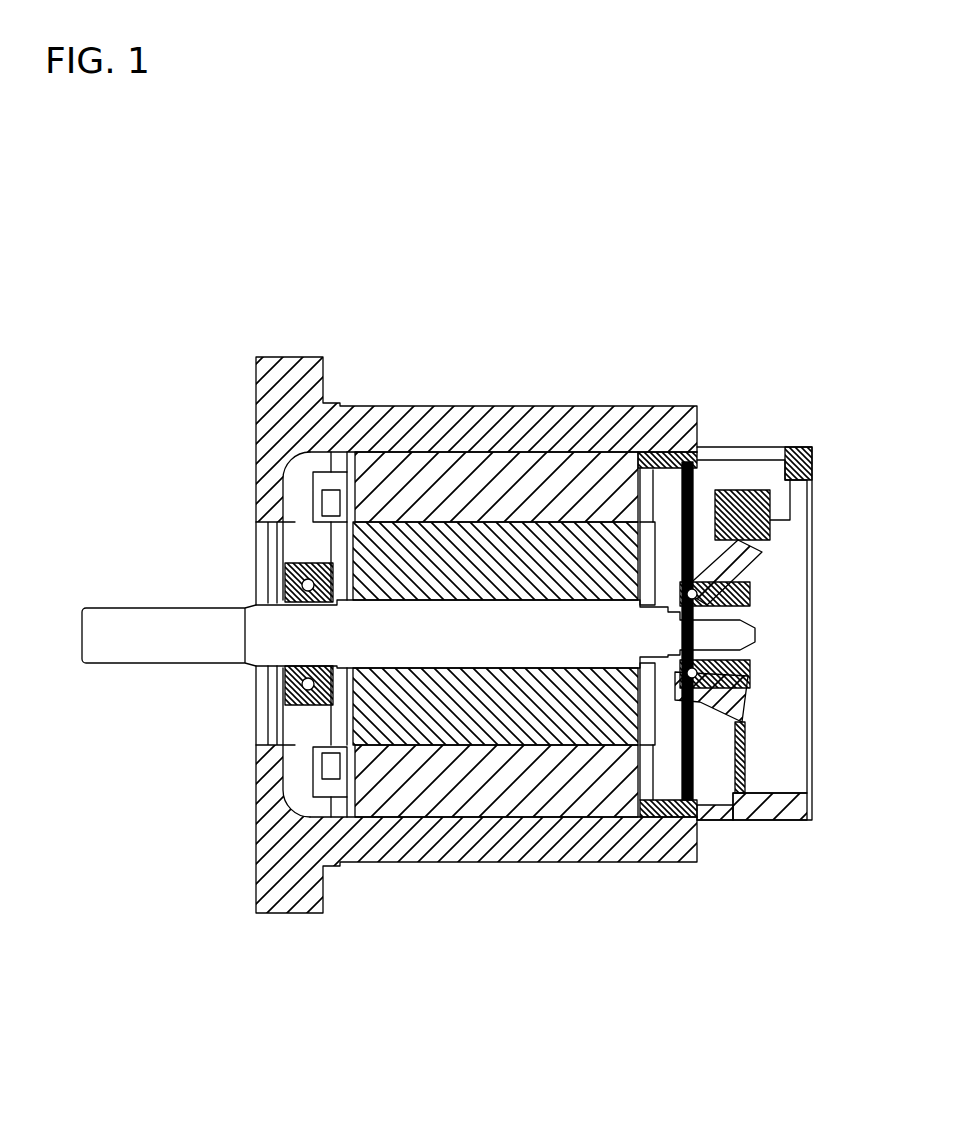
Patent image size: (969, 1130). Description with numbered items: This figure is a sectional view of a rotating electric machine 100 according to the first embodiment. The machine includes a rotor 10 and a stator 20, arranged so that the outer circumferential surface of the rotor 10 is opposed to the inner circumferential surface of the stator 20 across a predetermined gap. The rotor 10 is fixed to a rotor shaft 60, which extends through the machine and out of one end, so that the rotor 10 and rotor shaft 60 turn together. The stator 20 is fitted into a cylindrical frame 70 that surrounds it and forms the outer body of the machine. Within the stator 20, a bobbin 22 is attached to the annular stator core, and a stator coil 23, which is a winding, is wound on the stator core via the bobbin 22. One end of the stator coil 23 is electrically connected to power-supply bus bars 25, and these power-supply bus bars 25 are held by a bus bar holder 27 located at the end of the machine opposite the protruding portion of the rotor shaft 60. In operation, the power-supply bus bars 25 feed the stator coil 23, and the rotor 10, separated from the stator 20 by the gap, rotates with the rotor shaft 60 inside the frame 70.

The rotating electric machine 100 is at (417, 332).
The rotor 10 is at (480, 768).
The stator 20 is at (457, 472).
The bobbin 22 is at (328, 482).
The stator coil 23 is at (328, 510).
The power-supply bus bars 25 is at (694, 447).
The bus bar holder 27 is at (648, 452).
The rotor shaft 60 is at (178, 642).
The frame 70 is at (565, 410).